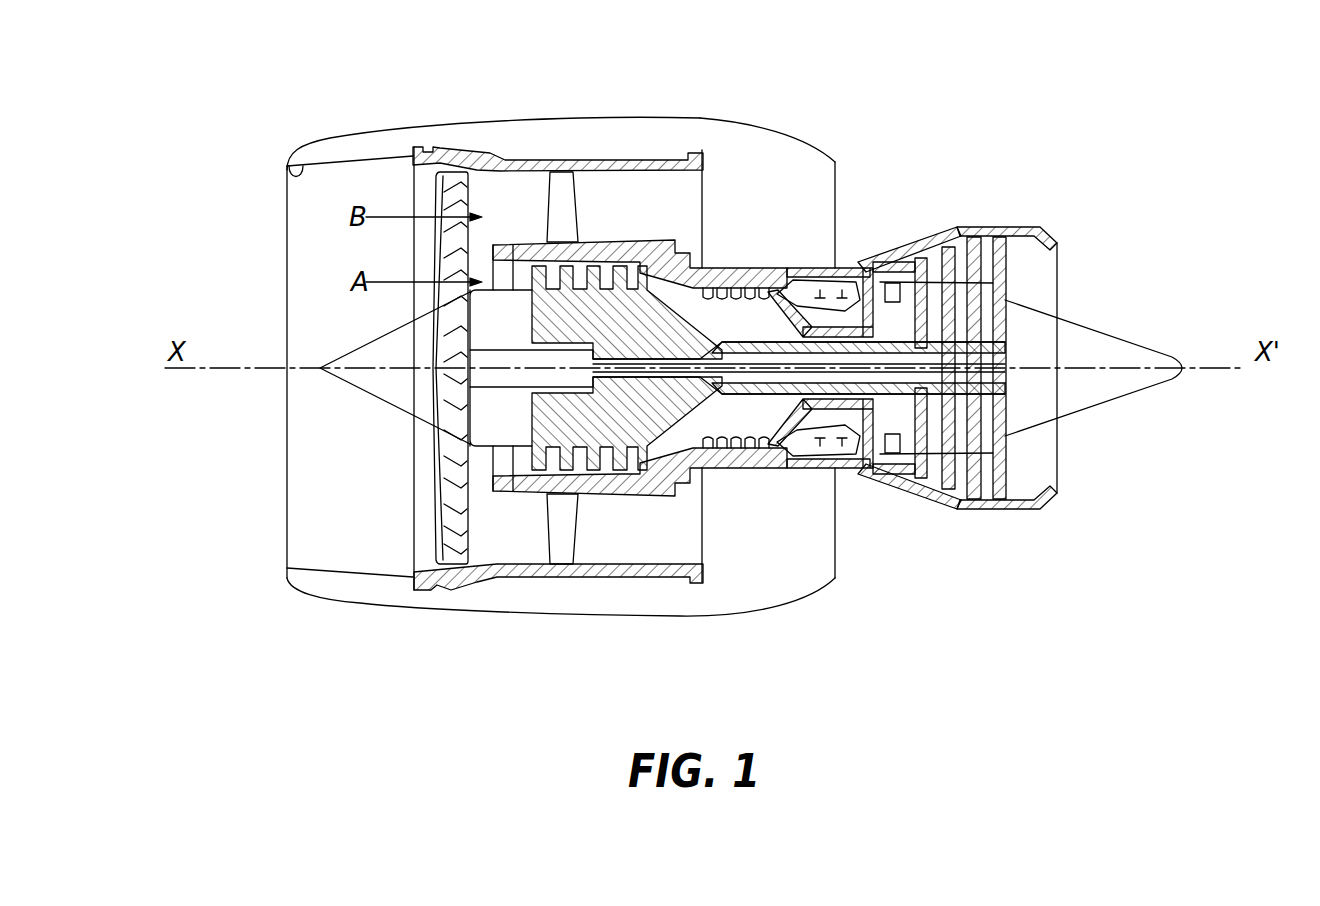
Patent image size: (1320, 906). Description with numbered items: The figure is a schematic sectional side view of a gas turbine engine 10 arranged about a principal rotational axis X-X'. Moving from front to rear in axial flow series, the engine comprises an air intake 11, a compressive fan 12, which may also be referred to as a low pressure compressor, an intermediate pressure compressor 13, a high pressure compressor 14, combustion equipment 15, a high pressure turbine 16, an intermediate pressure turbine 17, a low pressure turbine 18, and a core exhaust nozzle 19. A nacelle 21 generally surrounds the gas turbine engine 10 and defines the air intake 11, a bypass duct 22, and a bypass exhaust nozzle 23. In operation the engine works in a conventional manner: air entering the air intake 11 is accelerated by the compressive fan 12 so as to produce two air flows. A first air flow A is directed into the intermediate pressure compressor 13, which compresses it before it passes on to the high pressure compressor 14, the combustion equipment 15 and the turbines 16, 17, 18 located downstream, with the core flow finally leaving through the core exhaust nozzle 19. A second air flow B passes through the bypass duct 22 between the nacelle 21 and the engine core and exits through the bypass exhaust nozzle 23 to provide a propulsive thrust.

The gas turbine engine 10 is at (258, 73).
The air intake 11 is at (287, 179).
The compressive fan 12 is at (437, 503).
The intermediate pressure compressor 13 is at (583, 470).
The high pressure compressor 14 is at (727, 287).
The combustion equipment 15 is at (806, 452).
The high pressure turbine 16 is at (877, 470).
The intermediate pressure turbine 17 is at (923, 258).
The low pressure turbine 18 is at (944, 500).
The core exhaust nozzle 19 is at (1052, 236).
The nacelle 21 is at (619, 138).
The bypass duct 22 is at (802, 232).
The bypass exhaust nozzle 23 is at (817, 156).